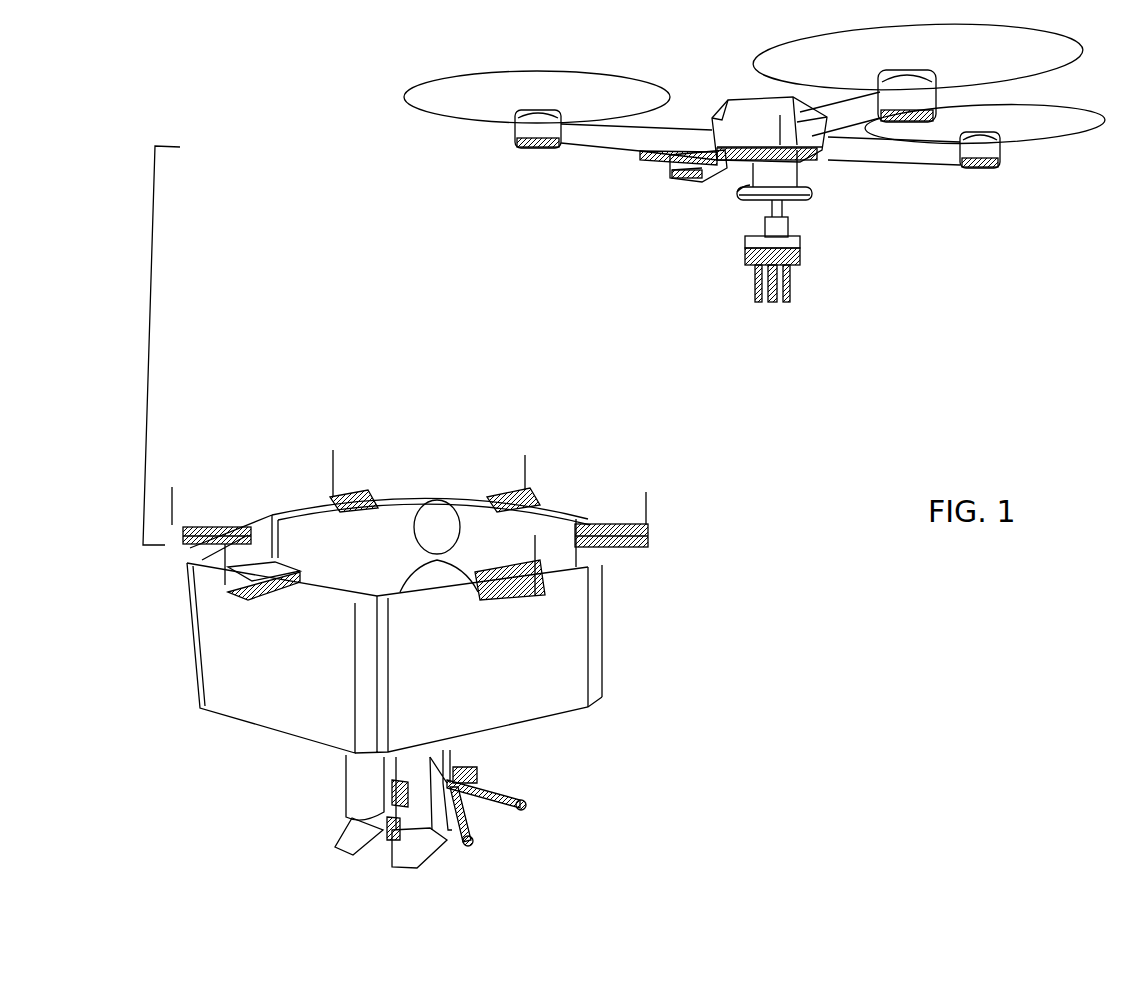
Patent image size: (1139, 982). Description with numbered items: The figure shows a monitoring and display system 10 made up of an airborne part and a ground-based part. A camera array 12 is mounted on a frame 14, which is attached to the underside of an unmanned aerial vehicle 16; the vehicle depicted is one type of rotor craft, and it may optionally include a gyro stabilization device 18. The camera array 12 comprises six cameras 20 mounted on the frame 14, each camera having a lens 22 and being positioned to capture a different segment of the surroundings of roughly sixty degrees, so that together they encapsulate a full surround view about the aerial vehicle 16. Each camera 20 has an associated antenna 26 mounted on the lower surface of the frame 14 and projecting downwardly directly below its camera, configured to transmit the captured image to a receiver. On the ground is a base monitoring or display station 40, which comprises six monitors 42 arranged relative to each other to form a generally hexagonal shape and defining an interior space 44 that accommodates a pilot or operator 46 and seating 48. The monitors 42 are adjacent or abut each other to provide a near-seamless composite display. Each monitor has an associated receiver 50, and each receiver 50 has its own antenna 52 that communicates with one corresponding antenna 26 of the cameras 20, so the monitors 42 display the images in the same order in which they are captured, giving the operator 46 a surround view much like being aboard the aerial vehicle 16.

The monitoring and display system 10 is at (284, 297).
The camera array 12 is at (753, 251).
The frame 14 is at (795, 234).
The unmanned aerial vehicle 16 is at (600, 38).
The gyro stabilization device 18 is at (698, 180).
The camera 20 is at (802, 243).
The lens 22 is at (800, 257).
The antenna 26 is at (790, 292).
The base monitoring or display station 40 is at (453, 656).
The monitor 42 is at (222, 712).
The interior space 44 is at (318, 528).
The pilot or operator 46 is at (440, 503).
The seating 48 is at (498, 783).
The receiver 50 is at (366, 493).
The antenna 52 is at (335, 470).